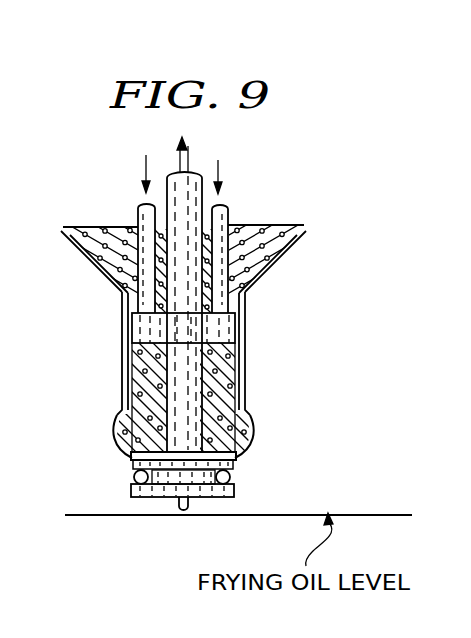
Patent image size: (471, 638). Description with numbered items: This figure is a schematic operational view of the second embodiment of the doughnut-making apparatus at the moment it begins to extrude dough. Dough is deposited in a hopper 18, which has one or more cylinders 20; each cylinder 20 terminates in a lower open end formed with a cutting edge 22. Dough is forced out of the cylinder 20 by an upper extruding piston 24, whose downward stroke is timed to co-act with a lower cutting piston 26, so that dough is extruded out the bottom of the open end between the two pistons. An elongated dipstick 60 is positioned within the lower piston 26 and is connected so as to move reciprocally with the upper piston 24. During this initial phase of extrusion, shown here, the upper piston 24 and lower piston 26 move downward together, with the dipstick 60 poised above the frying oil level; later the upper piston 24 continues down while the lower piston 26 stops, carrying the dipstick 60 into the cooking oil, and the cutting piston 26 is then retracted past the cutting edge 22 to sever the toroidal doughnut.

The hopper 18 is at (268, 291).
The cylinder 20 is at (242, 355).
The cutting edge 22 is at (243, 417).
The upper extruding piston 24 is at (143, 333).
The lower cutting piston 26 is at (137, 463).
The dipstick 60 is at (190, 503).